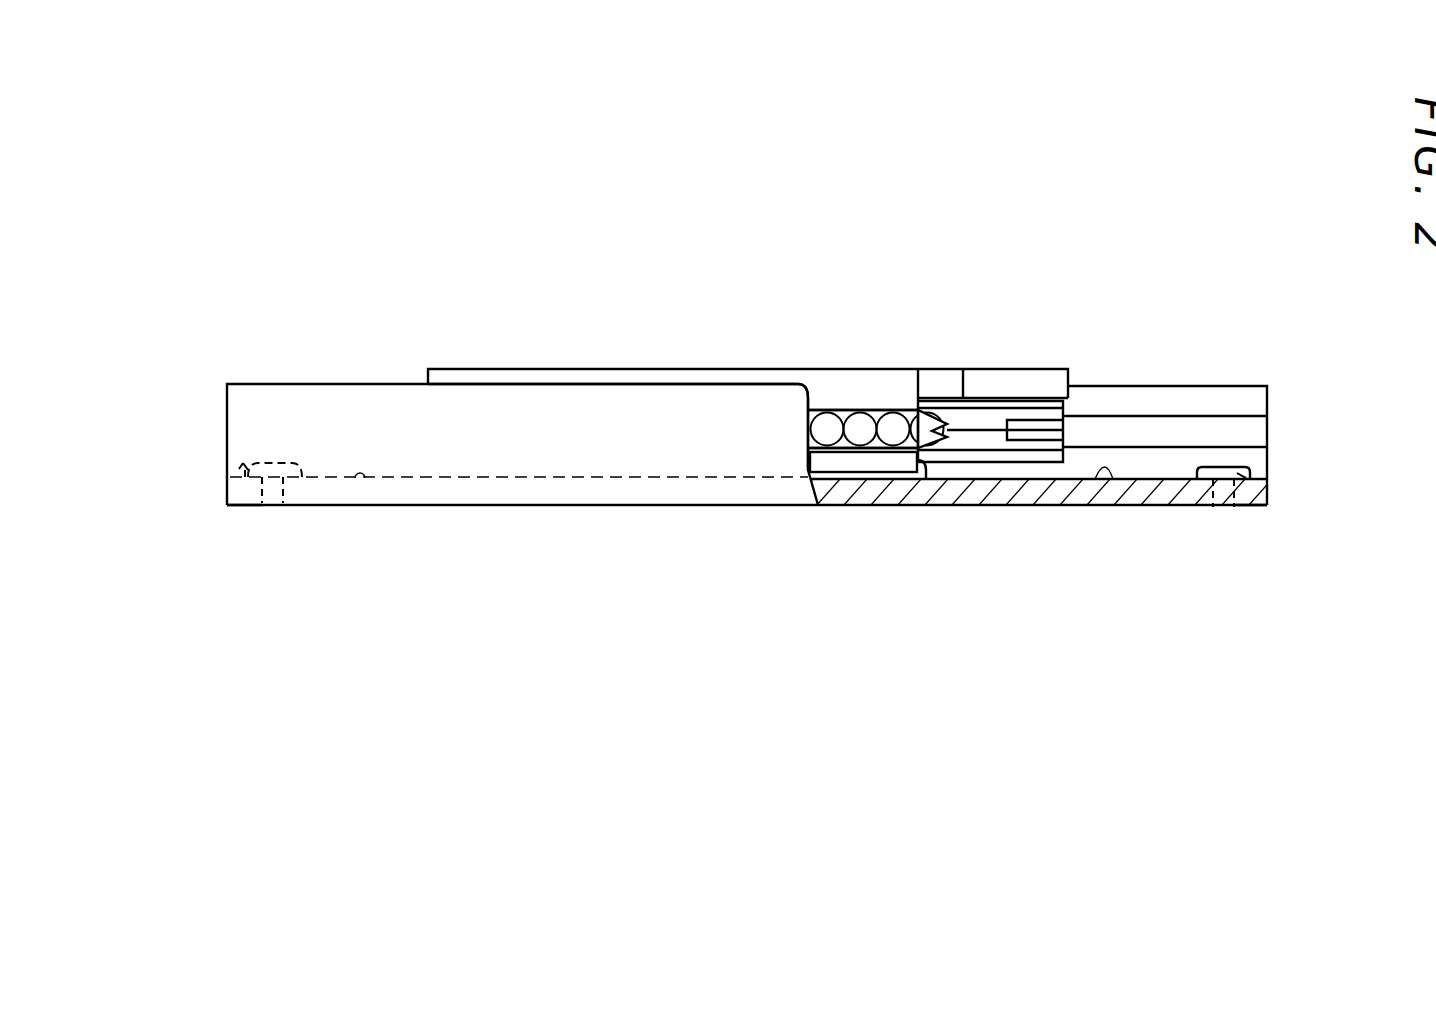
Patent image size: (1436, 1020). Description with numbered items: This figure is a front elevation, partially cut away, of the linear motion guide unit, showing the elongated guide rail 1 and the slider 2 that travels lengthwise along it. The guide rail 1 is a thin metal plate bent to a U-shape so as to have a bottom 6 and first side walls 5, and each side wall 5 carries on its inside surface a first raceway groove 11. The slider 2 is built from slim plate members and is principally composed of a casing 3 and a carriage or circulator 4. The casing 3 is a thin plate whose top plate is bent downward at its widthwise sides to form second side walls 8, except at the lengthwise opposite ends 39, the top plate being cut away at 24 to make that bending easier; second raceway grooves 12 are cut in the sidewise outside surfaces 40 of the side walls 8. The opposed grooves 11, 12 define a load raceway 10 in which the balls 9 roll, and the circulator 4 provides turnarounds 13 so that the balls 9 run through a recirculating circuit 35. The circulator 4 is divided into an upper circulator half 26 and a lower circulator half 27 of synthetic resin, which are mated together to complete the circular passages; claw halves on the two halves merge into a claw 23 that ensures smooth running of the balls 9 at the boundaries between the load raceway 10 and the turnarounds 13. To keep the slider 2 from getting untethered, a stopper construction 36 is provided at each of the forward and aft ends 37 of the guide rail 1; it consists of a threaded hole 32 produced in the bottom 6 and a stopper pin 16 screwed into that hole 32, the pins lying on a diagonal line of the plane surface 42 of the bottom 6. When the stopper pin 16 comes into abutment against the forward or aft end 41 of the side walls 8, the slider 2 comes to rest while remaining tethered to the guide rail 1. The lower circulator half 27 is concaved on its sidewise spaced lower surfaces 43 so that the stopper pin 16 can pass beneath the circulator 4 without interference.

The guide rail 1 is at (297, 418).
The slider 2 is at (692, 379).
The casing 3 is at (882, 383).
The carriage (circulator) 4 is at (1005, 447).
The first side walls 5 is at (562, 417).
The bottom 6 is at (445, 498).
The second side walls 8 is at (883, 463).
The rolling elements (balls) 9 is at (827, 425).
The load raceway 10 is at (872, 452).
The first raceway grooves 11 is at (1150, 432).
The second raceway grooves 12 is at (842, 450).
The turnarounds 13 is at (926, 415).
The stopper pin 16 is at (240, 462).
The claw 23 is at (938, 440).
The cut-away 24 is at (962, 385).
The upper circulator half 26 is at (993, 415).
The lower circulator half 27 is at (993, 443).
The threaded hole 32 is at (273, 497).
The recirculating circuit 35 is at (873, 410).
The stopper construction 36 is at (293, 459).
The forward and aft ends of the guide rail 37 is at (247, 493).
The lengthwise opposite ends of the top plate 39 is at (1028, 378).
The sidewise outside surfaces 40 is at (817, 387).
The forward and aft ends of the side walls 41 is at (926, 470).
The plane surface 42 is at (363, 483).
The lower surfaces 43 is at (1048, 462).